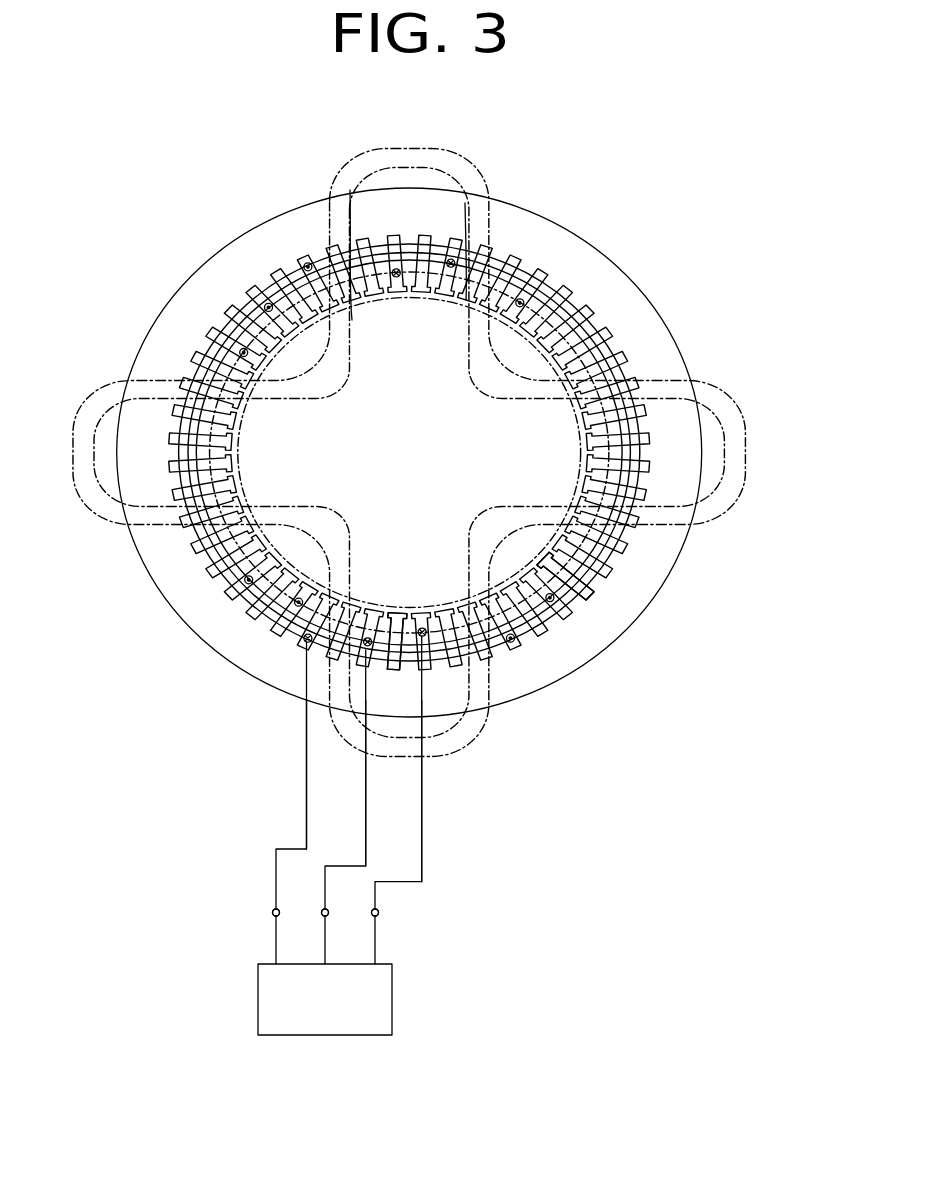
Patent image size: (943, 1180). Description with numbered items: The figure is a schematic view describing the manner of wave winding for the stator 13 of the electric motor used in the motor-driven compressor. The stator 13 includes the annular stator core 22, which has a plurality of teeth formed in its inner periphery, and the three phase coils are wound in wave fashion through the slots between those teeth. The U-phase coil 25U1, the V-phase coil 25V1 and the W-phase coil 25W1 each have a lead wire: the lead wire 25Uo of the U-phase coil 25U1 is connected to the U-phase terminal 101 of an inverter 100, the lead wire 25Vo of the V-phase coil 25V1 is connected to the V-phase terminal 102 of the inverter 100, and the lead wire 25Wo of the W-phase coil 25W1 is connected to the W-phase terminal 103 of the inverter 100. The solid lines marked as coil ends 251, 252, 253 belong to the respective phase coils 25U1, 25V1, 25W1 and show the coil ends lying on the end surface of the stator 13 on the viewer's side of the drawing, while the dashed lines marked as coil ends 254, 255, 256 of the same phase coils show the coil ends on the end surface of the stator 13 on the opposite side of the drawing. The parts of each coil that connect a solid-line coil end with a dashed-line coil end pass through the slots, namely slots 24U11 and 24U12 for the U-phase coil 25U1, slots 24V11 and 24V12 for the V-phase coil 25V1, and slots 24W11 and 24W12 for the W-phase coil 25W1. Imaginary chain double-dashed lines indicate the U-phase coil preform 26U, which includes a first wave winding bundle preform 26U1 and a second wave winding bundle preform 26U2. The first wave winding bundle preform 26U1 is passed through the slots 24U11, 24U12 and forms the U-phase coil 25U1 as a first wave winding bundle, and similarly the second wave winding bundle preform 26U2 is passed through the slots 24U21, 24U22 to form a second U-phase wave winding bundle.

The stator 13 is at (675, 265).
The annular stator core 22 is at (671, 334).
The slot 24U11 is at (521, 296).
The slot 24U12 is at (305, 260).
The slot 24U21 is at (466, 300).
The slot 24U22 is at (352, 320).
The slot 24V11 is at (451, 238).
The slot 24V12 is at (256, 288).
The slot 24W11 is at (396, 232).
The slot 24W12 is at (213, 333).
The U-phase coil 25U1 is at (296, 642).
The V-phase coil 25V1 is at (366, 632).
The W-phase coil 25W1 is at (419, 626).
The lead wire 25Uo is at (306, 798).
The lead wire 25Vo is at (366, 814).
The lead wire 25Wo is at (422, 838).
The coil end 251 is at (502, 648).
The coil end 252 is at (550, 622).
The coil end 253 is at (578, 600).
The coil end 254 is at (230, 584).
The coil end 255 is at (260, 612).
The coil end 256 is at (395, 668).
The U-phase coil preform 26U is at (430, 453).
The first wave winding bundle preform 26U1 is at (733, 494).
The second wave winding bundle preform 26U2 is at (704, 494).
The inverter 100 is at (393, 1003).
The U-phase terminal 101 is at (272, 912).
The V-phase terminal 102 is at (321, 912).
The W-phase terminal 103 is at (379, 912).